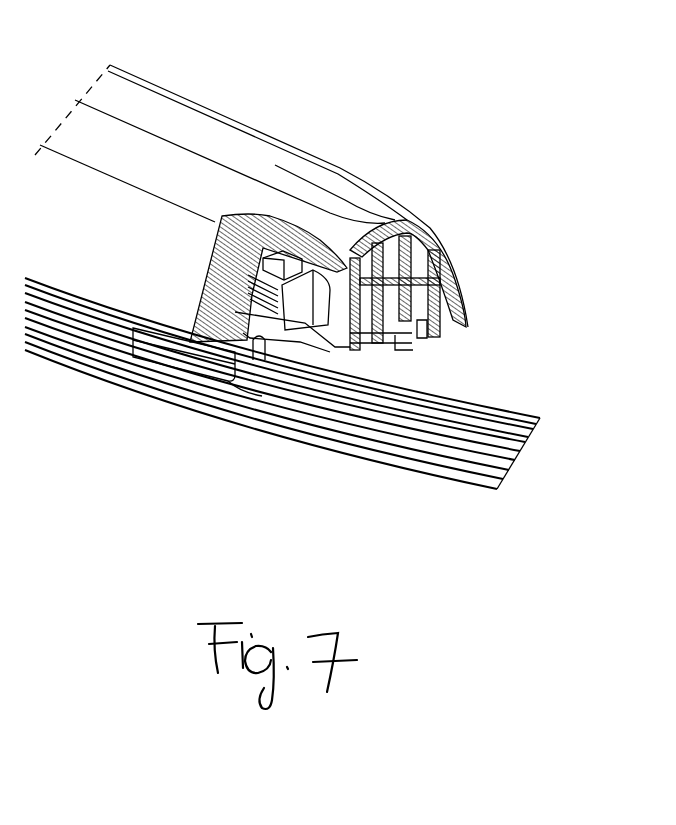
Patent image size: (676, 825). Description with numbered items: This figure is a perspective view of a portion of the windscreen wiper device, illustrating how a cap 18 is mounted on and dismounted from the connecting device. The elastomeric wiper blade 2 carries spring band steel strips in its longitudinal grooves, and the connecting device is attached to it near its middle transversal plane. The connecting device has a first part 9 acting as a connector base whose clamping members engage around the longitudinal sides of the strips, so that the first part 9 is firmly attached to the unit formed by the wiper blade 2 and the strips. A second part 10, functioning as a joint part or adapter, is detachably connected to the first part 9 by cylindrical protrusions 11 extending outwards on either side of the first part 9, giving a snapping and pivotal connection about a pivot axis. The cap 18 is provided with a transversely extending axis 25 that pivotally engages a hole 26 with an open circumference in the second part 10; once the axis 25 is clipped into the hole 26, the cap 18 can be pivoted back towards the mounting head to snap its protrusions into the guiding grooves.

The cap 18 is at (203, 122).
The elastomeric wiper blade 2 is at (430, 473).
The first part 9 is at (272, 398).
The second part 10 is at (297, 353).
The cylindrical protrusions 11 is at (232, 365).
The axis 25 is at (395, 345).
The hole 26 is at (360, 373).